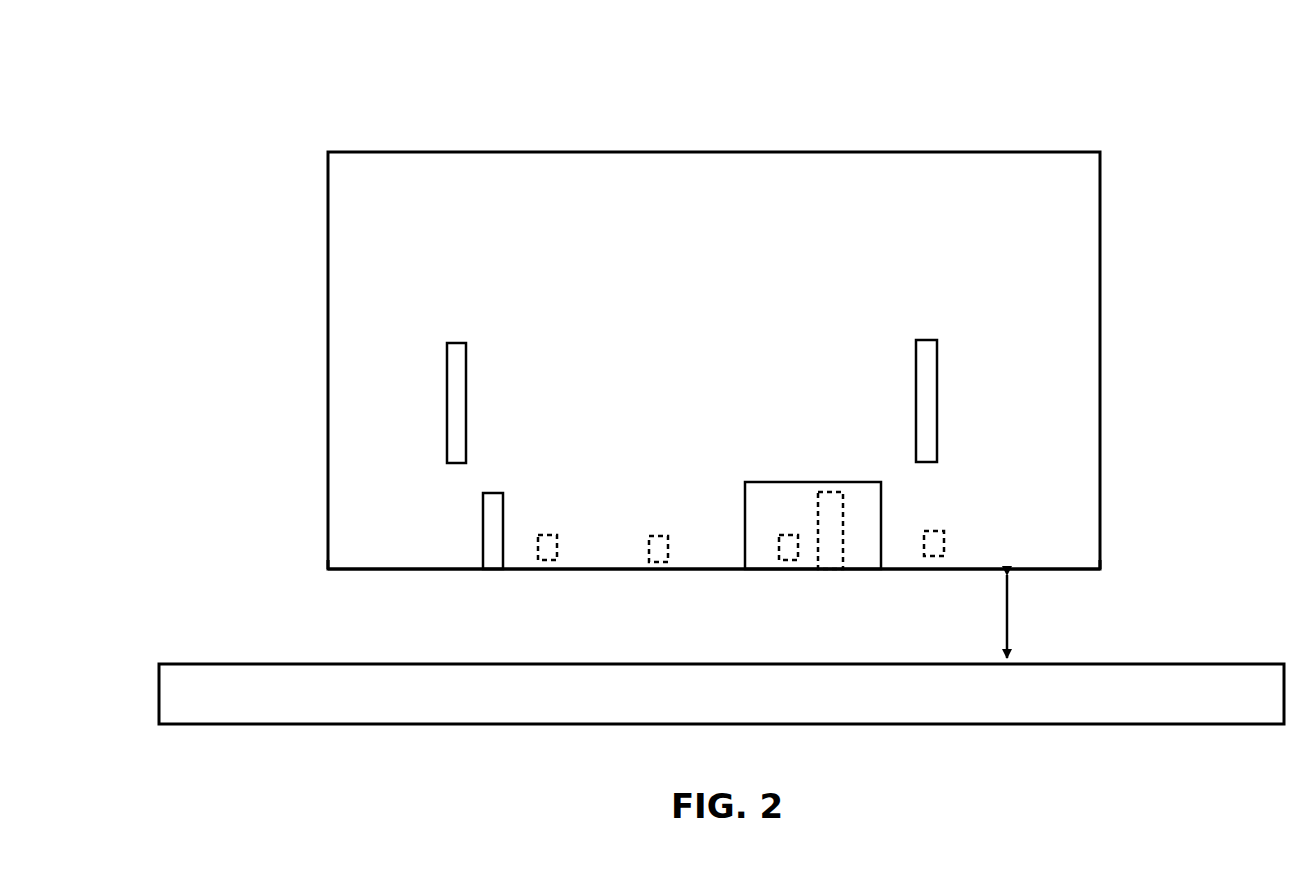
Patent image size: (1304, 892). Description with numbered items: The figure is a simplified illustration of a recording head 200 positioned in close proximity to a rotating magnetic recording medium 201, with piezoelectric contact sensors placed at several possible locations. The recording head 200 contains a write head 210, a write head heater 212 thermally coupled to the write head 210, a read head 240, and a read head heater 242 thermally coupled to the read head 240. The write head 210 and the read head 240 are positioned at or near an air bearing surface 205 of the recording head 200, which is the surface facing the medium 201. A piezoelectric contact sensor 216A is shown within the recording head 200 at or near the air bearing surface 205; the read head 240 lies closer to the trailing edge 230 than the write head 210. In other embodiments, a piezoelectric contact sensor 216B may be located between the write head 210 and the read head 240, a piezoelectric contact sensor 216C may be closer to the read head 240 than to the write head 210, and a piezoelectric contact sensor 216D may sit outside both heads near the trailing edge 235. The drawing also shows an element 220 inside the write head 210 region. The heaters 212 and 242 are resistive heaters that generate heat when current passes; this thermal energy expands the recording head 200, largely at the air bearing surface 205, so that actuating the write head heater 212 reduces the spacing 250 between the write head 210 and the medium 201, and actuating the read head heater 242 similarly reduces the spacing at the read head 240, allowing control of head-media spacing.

The recording head 200 is at (620, 106).
The rotating magnetic recording medium 201 is at (721, 694).
The air bearing surface 205 is at (413, 569).
The write head 210 is at (775, 482).
The write head heater 212 is at (930, 340).
The piezoelectric contact sensor 216A is at (773, 542).
The piezoelectric contact sensor 216B is at (650, 530).
The piezoelectric contact sensor 216C is at (546, 530).
The piezoelectric contact sensor 216D is at (941, 527).
The embedded element 220 is at (830, 492).
The trailing edge 230 is at (328, 569).
The trailing edge 235 is at (1100, 569).
The read head 240 is at (483, 516).
The read head heater 242 is at (466, 380).
The spacing 250 is at (1007, 628).